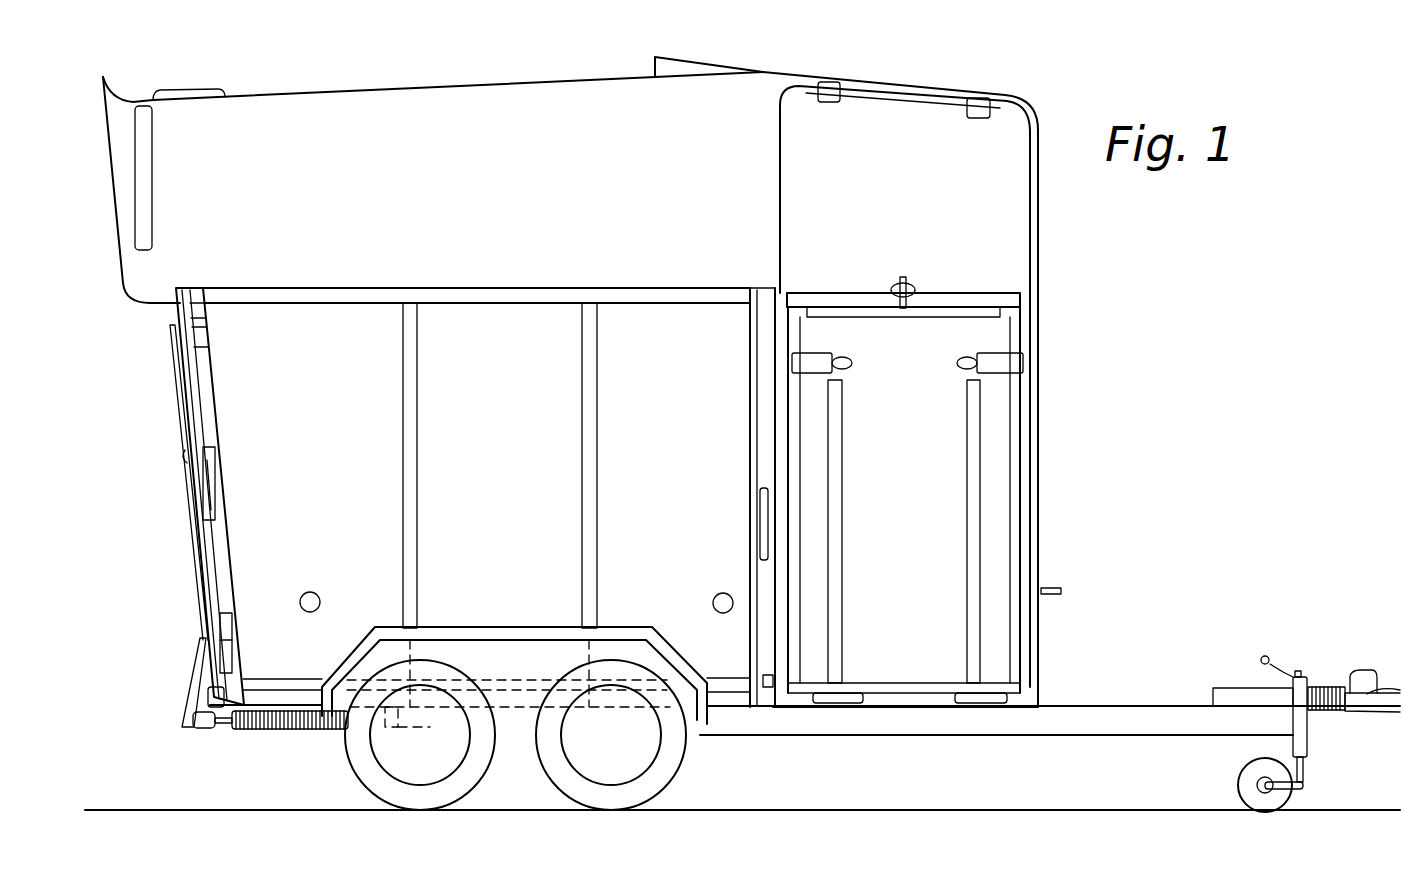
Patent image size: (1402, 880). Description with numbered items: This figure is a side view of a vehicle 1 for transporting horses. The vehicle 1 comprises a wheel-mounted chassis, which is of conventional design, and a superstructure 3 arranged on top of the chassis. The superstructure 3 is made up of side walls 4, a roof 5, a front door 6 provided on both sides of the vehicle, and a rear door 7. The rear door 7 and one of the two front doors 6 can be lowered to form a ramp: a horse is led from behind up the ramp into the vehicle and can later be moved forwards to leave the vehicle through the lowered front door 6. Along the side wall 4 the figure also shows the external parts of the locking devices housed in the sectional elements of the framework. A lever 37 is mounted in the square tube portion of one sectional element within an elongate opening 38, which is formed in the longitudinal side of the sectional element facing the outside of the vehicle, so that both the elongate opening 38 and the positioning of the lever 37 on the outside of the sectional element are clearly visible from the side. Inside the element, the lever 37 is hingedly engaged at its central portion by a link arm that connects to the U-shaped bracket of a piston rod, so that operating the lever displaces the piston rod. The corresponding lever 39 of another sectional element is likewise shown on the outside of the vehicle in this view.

The vehicle 1 is at (1073, 556).
The superstructure 3 is at (1038, 337).
The side walls 4 is at (674, 455).
The roof 5 is at (390, 90).
The front door 6 is at (1028, 460).
The rear door 7 is at (185, 492).
The lever 37 is at (209, 488).
The elongate opening 38 is at (204, 447).
The lever 39 is at (760, 518).